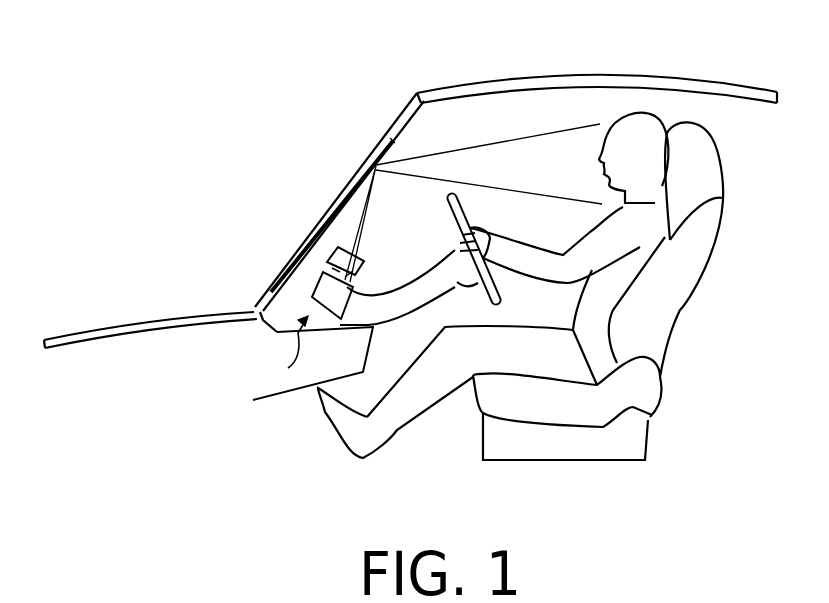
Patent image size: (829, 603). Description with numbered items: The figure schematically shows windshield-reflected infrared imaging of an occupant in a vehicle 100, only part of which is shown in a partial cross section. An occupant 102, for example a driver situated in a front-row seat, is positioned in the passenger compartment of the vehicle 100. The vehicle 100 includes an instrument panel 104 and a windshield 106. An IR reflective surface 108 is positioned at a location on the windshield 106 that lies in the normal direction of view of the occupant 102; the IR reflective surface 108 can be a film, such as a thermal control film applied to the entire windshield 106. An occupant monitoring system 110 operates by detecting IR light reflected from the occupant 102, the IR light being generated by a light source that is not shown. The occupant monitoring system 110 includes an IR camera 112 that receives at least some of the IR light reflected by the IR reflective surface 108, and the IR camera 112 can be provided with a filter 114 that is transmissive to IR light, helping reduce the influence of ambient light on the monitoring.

The vehicle 100 is at (707, 45).
The occupant 102 is at (615, 235).
The instrument panel 104 is at (318, 368).
The windshield 106 is at (367, 152).
The IR reflective surface 108 is at (333, 227).
The occupant monitoring system 110 is at (279, 353).
The IR camera 112 is at (313, 305).
The filter 114 is at (327, 263).